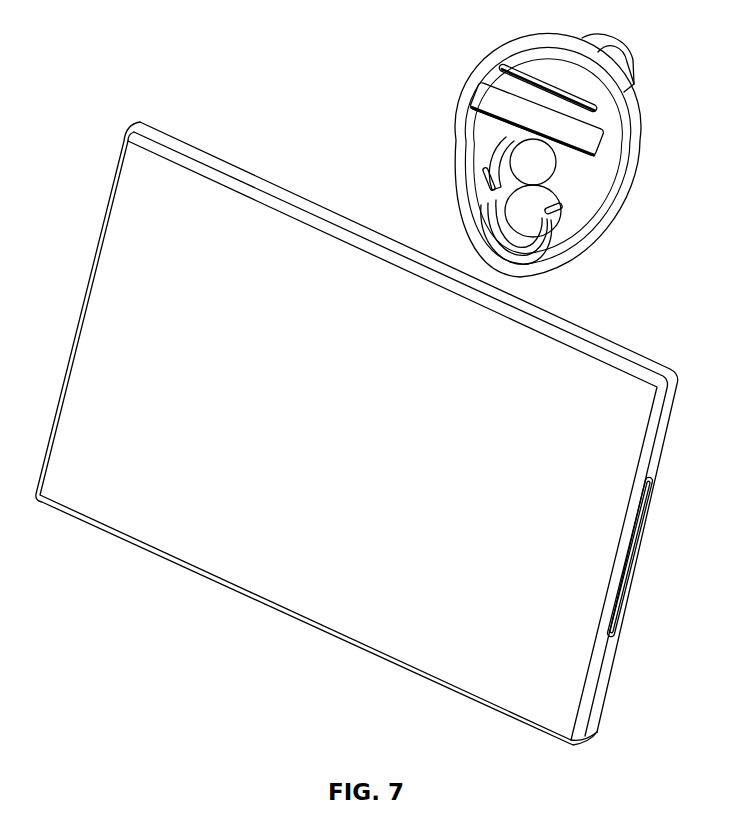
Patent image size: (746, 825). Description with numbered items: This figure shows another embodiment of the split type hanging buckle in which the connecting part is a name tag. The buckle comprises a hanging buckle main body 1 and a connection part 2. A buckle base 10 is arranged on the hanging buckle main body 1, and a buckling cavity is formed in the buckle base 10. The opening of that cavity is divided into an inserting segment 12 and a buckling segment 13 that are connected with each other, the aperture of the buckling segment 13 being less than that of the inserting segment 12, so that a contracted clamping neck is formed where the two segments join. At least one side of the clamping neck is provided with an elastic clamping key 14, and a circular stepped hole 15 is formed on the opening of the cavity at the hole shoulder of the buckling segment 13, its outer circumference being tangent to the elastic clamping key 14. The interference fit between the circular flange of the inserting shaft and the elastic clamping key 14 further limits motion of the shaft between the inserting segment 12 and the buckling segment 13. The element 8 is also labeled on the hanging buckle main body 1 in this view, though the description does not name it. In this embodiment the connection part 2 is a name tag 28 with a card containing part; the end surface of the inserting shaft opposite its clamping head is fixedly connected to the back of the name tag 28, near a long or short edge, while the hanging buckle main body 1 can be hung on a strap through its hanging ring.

The hanging buckle main body 1 is at (533, 158).
The connection part 2 is at (357, 433).
The ring body 8 is at (553, 48).
The buckle base 10 is at (553, 247).
The inserting segment 12 is at (500, 162).
The buckling segment 13 is at (500, 227).
The elastic clamping key 14 is at (507, 187).
The circular stepped hole 15 is at (482, 216).
The name tag 28 is at (247, 462).